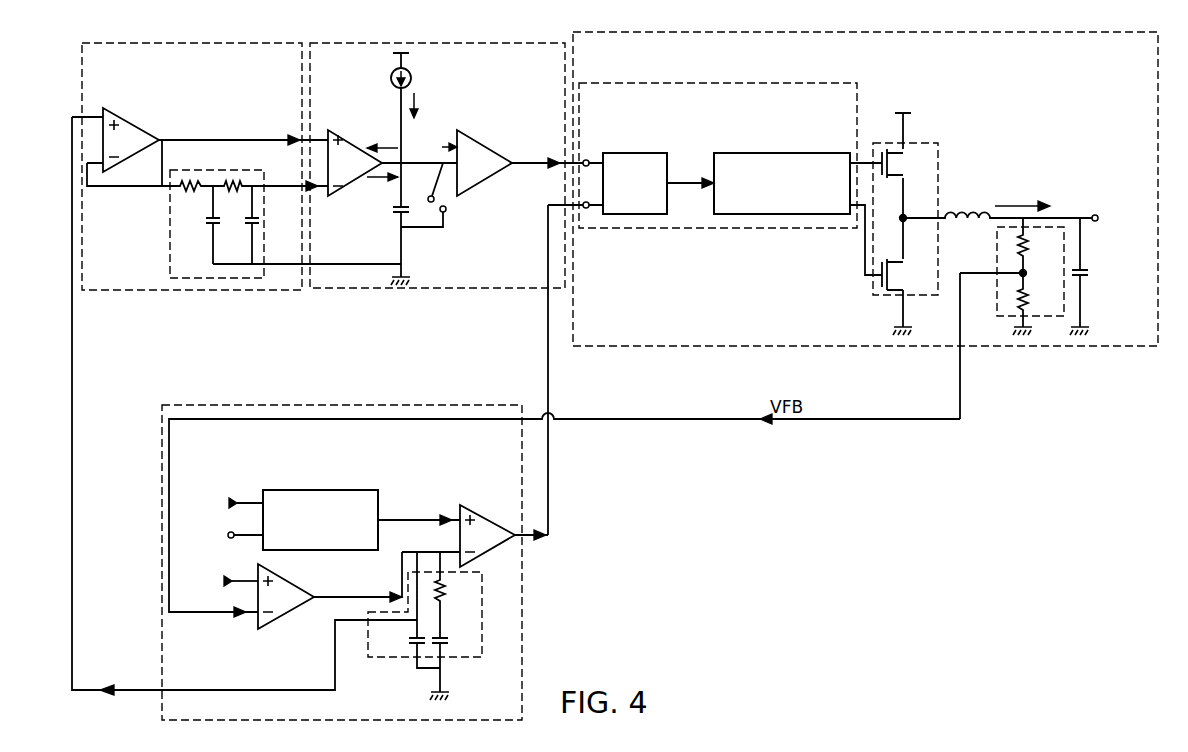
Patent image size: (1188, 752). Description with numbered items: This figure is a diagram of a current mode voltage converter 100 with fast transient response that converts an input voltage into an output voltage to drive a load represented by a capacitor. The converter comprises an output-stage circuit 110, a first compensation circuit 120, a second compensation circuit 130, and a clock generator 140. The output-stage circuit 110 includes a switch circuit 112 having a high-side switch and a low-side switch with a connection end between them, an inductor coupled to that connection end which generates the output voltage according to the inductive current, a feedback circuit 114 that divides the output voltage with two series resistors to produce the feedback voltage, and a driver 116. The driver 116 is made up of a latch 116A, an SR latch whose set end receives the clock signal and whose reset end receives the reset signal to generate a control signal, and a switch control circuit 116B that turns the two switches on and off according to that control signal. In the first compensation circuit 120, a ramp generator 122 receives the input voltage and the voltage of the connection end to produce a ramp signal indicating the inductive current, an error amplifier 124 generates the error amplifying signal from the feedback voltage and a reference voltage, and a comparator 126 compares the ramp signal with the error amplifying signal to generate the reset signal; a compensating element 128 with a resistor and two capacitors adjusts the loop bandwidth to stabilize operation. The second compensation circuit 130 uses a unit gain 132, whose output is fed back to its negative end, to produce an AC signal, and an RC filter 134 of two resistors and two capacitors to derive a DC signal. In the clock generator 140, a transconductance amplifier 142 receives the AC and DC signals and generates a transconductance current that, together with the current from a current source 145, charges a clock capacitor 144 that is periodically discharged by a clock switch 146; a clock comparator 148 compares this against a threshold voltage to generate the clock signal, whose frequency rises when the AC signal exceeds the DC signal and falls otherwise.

The current mode voltage converter 100 is at (140, 36).
The output-stage circuit 110 is at (571, 35).
The switch circuit 112 is at (940, 157).
The feedback circuit 114 is at (997, 293).
The driver 116 is at (722, 228).
The latch 116A is at (645, 153).
The switch control circuit 116B is at (795, 153).
The first compensation circuit 120 is at (523, 618).
The ramp generator 122 is at (333, 490).
The error amplifier 124 is at (283, 630).
The comparator 126 is at (487, 506).
The compensating element 128 is at (470, 660).
The second compensation circuit 130 is at (190, 290).
The unit gain 132 is at (130, 121).
The RC filter 134 is at (170, 212).
The clock generator 140 is at (437, 290).
The transconductance amplifier 142 is at (352, 131).
The clock capacitor 144 is at (395, 207).
The current source 145 is at (412, 78).
The clock switch 146 is at (447, 203).
The clock comparator 148 is at (484, 134).